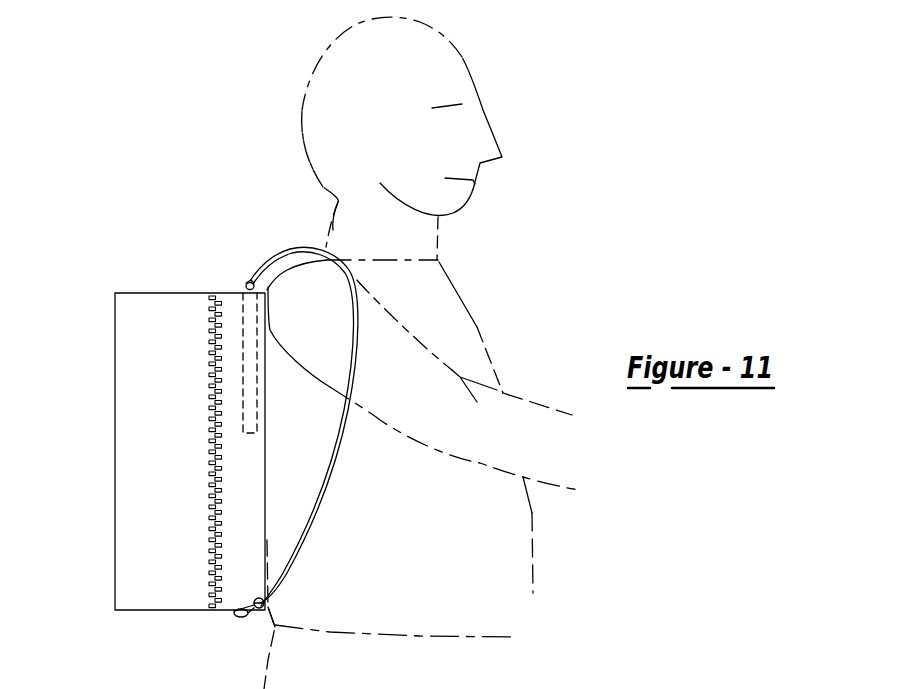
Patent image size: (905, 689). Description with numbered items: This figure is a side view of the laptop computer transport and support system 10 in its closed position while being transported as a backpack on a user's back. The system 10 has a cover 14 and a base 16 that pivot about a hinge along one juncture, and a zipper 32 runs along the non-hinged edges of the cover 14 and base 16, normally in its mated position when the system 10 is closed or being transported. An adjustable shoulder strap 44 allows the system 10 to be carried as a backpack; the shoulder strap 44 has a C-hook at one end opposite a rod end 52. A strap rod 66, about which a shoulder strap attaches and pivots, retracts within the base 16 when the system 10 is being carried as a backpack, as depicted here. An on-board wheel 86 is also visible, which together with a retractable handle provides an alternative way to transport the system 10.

The laptop computer transport and support system 10 is at (70, 258).
The cover 14 is at (162, 478).
The base 16 is at (246, 493).
The zipper 32 is at (210, 338).
The shoulder strap 44 is at (283, 250).
The rod end 52 is at (247, 286).
The strap rod 66 is at (243, 614).
The wheel 86 is at (235, 613).